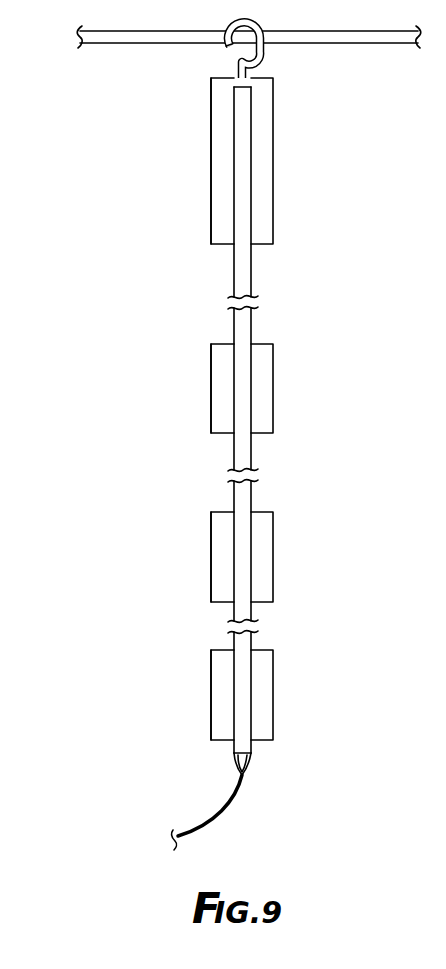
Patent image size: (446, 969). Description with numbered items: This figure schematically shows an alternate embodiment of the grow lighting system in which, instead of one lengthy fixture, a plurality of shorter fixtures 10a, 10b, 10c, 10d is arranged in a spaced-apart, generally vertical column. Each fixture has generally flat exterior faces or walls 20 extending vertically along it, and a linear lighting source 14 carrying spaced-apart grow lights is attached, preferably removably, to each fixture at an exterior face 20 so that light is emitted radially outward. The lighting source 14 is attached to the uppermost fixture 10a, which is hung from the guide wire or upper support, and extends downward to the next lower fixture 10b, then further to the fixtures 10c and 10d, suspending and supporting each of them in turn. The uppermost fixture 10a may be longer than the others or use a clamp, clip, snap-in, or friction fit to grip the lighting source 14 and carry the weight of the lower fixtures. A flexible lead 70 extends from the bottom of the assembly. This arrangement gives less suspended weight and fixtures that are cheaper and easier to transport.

The uppermost fixture 10a is at (273, 150).
The second fixture 10b is at (273, 373).
The third fixture 10c is at (273, 538).
The fourth fixture 10d is at (273, 690).
The lighting source 14 is at (252, 268).
The exterior face 20 is at (220, 151).
The outlet tubing 70 is at (232, 810).